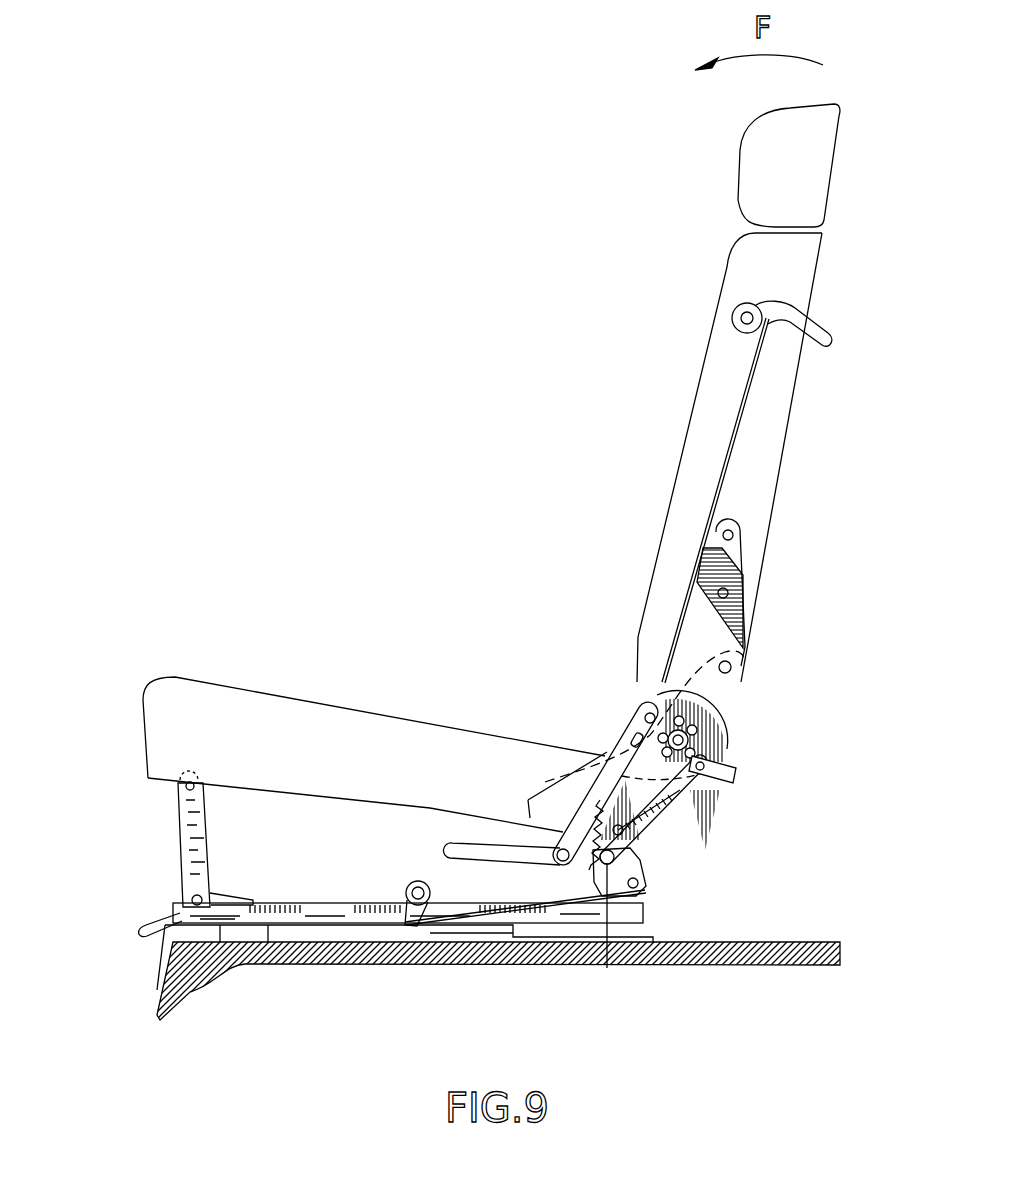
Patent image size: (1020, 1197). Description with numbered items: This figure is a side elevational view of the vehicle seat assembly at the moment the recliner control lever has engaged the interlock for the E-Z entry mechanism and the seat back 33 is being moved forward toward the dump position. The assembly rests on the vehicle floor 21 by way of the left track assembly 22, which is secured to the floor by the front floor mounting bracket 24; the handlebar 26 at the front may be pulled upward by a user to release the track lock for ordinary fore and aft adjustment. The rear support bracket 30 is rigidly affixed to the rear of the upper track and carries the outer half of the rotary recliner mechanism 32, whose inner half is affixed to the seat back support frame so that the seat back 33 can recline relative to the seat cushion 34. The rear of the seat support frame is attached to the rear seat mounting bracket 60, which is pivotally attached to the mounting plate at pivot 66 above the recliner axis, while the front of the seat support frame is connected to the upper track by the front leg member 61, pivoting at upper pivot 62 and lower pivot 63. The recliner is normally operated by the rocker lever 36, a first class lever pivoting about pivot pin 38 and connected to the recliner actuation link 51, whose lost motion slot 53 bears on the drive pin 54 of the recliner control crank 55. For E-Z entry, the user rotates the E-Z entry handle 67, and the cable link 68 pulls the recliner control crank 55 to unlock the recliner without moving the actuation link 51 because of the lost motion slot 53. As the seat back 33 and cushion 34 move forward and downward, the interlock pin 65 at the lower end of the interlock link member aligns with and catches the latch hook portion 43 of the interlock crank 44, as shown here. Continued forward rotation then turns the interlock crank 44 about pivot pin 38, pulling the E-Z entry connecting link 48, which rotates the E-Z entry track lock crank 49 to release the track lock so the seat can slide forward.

The vehicle floor 21 is at (685, 958).
The left track assembly 22 is at (268, 925).
The front floor mounting bracket 24 is at (160, 958).
The handlebar 26 is at (140, 931).
The rear support bracket 30 is at (735, 798).
The rotary recliner mechanism 32 is at (730, 738).
The seat back 33 is at (778, 398).
The seat cushion 34 is at (414, 740).
The rocker lever 36 is at (446, 848).
The pivot pin 38 is at (607, 968).
The latch hook portion 43 is at (642, 868).
The interlock crank 44 is at (660, 854).
The E-Z entry connecting link 48 is at (478, 913).
The E-Z entry track lock crank 49 is at (404, 902).
The recliner actuation link 51 is at (626, 756).
The lost motion slot 53 is at (634, 733).
The drive pin 54 is at (650, 712).
The recliner control crank 55 is at (600, 796).
The rear seat mounting bracket 60 is at (723, 691).
The front leg member 61 is at (184, 838).
The upper pivot 62 is at (185, 786).
The lower pivot 63 is at (190, 900).
The interlock pin 65 is at (640, 878).
The pivot 66 is at (733, 667).
The E-Z entry handle 67 is at (833, 339).
The cable link 68 is at (728, 424).